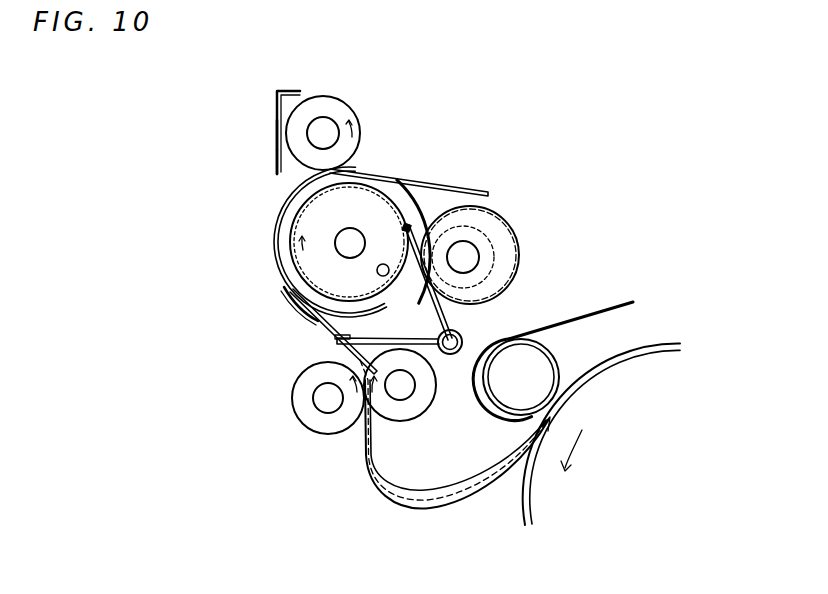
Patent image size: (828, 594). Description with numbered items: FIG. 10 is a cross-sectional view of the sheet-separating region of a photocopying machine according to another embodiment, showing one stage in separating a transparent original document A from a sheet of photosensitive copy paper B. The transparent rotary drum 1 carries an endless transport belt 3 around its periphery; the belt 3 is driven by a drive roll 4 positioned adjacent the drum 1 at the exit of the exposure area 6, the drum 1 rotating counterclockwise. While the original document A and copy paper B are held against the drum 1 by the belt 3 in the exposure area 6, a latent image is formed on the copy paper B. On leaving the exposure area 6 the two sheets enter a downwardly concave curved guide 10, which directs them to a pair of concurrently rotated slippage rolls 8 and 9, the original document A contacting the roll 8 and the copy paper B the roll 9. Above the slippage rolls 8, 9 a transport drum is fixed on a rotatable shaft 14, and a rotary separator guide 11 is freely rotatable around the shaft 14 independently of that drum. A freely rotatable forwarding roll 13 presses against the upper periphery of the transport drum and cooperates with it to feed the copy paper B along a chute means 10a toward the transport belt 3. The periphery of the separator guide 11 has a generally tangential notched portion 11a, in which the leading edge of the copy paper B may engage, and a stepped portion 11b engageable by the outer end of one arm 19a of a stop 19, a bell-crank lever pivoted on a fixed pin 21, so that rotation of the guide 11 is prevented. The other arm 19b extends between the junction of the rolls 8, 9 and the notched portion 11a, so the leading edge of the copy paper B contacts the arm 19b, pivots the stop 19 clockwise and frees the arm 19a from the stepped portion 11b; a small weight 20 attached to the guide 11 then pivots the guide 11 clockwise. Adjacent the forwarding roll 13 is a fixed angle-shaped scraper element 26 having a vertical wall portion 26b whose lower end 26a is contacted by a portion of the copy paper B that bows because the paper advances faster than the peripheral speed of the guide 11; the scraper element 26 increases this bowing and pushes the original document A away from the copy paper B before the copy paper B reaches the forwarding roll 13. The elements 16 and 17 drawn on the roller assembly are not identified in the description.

The transparent rotary drum 1 is at (670, 343).
The endless transport belt 3 is at (598, 300).
The drive roll 4 is at (560, 375).
The exposure area 6 is at (648, 343).
The slippage roll 8 is at (318, 420).
The slippage roll 9 is at (405, 413).
The curved guide 10 is at (462, 509).
The chute means 10a is at (413, 198).
The rotary separator guide 11 is at (365, 309).
The notched portion 11a is at (292, 312).
The stepped portion 11b is at (422, 234).
The forwarding roll 13 is at (336, 108).
The rotatable shaft 14 is at (358, 243).
The shaft 16 is at (470, 253).
The roller 17 is at (508, 260).
The stop 19 is at (487, 288).
The stop arm 19a is at (430, 232).
The stop arm 19b is at (357, 374).
The small weight 20 is at (377, 270).
The fixed pin 21 is at (451, 355).
The scraper element 26 is at (274, 115).
The lower end 26a is at (274, 176).
The vertical wall portion 26b is at (275, 150).
The original document A is at (418, 500).
The copy paper B is at (448, 494).